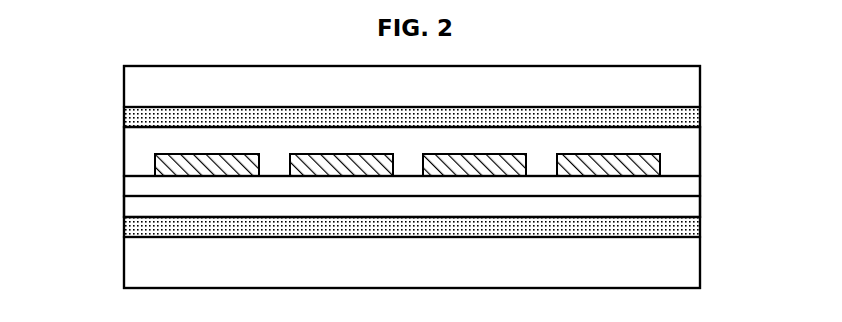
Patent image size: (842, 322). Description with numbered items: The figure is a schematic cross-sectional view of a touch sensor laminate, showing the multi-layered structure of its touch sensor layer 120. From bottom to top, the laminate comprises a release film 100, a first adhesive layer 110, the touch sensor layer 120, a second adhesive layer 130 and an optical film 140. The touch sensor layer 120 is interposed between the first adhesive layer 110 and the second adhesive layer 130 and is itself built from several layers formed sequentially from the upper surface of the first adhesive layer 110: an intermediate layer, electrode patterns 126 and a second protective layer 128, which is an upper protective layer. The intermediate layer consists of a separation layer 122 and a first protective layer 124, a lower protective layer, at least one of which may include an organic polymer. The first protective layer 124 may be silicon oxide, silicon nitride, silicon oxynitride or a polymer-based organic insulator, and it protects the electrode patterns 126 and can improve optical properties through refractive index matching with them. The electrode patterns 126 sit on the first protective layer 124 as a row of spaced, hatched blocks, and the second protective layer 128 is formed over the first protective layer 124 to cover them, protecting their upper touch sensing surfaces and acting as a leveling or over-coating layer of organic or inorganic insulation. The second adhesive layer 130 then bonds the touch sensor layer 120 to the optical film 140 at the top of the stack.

The release film 100 is at (702, 260).
The first adhesive layer 110 is at (702, 230).
The touch sensor layer 120 is at (708, 128).
The separation layer 122 is at (122, 213).
The first protective layer 124 is at (122, 192).
The electrode patterns 126 is at (155, 173).
The second protective layer 128 is at (122, 147).
The second adhesive layer 130 is at (702, 113).
The optical film 140 is at (702, 83).